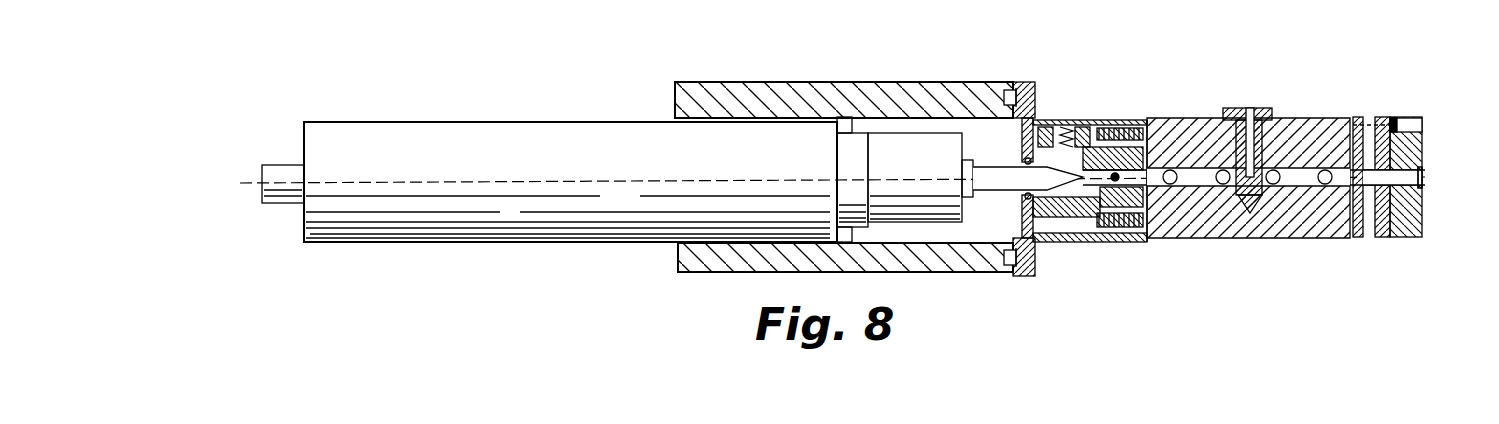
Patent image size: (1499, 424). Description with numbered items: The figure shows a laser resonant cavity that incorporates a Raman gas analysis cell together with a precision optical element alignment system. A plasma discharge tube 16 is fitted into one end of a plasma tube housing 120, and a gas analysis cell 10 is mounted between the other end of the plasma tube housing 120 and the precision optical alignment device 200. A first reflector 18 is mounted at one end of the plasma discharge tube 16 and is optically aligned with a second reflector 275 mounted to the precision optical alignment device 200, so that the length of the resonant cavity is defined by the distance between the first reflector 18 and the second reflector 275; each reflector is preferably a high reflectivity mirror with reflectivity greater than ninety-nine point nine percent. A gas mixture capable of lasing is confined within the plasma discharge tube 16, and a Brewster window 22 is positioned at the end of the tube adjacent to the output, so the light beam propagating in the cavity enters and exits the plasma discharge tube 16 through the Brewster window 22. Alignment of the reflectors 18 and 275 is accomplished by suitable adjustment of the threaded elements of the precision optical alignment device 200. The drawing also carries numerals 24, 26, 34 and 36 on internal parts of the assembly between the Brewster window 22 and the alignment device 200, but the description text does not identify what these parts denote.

The gas analysis cell 10 is at (1158, 258).
The plasma discharge tube 16 is at (517, 130).
The first reflector 18 is at (262, 171).
The Brewster window 22 is at (1088, 242).
The body block 24 is at (1320, 118).
The bearing block 26 is at (1198, 160).
The set screw 34 is at (1247, 112).
The balls 36 is at (1172, 185).
The plasma tube housing 120 is at (840, 82).
The precision optical alignment device 200 is at (1425, 243).
The second reflector 275 is at (1424, 173).